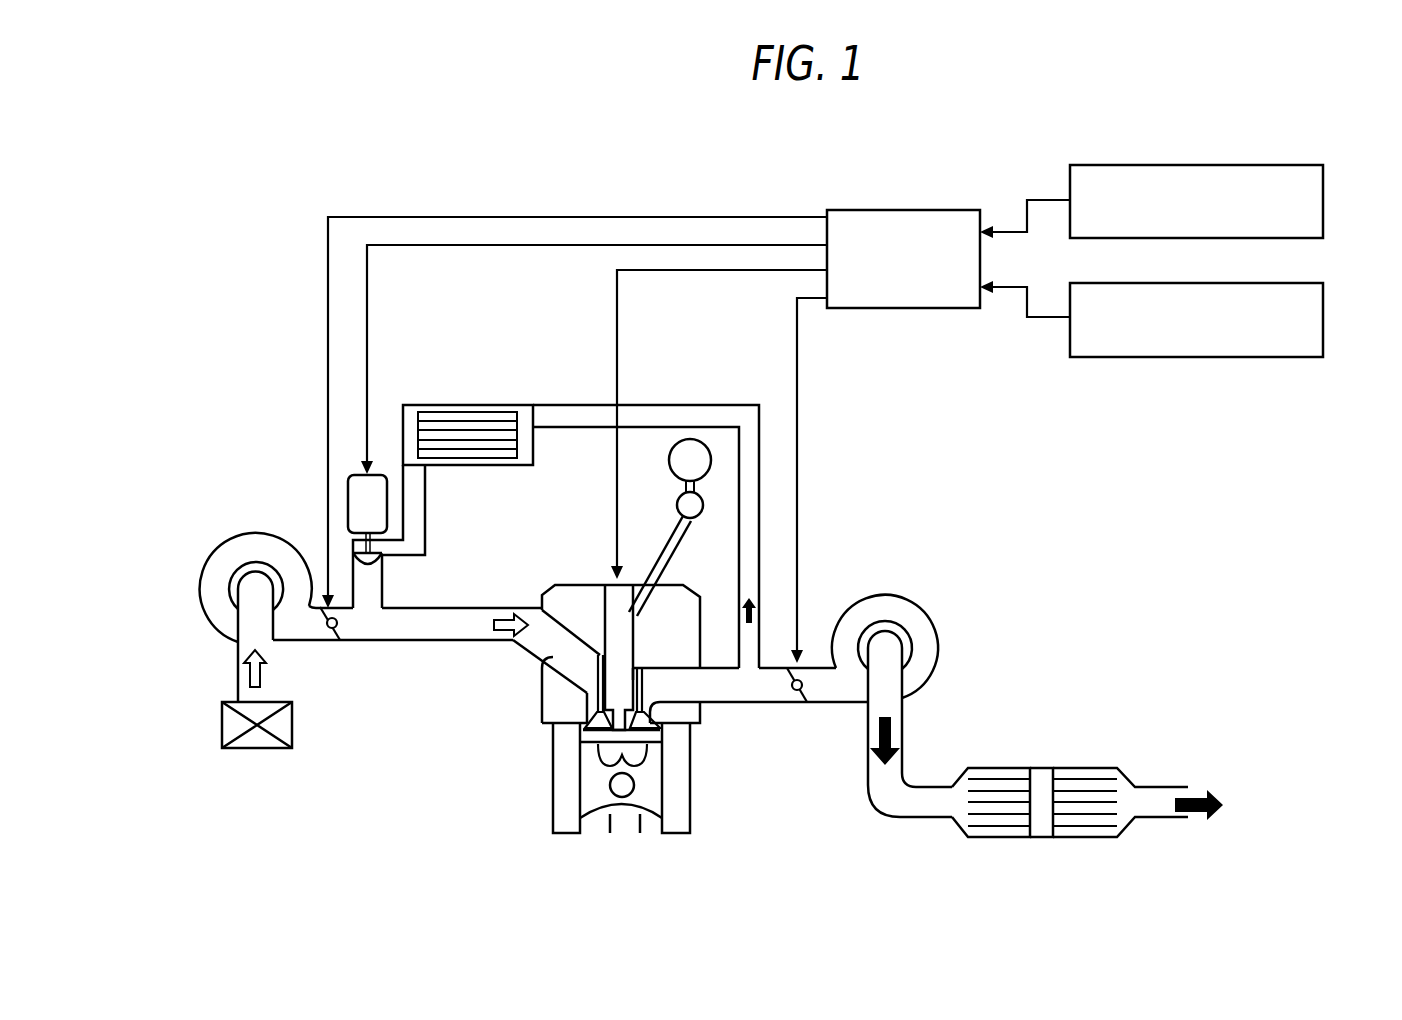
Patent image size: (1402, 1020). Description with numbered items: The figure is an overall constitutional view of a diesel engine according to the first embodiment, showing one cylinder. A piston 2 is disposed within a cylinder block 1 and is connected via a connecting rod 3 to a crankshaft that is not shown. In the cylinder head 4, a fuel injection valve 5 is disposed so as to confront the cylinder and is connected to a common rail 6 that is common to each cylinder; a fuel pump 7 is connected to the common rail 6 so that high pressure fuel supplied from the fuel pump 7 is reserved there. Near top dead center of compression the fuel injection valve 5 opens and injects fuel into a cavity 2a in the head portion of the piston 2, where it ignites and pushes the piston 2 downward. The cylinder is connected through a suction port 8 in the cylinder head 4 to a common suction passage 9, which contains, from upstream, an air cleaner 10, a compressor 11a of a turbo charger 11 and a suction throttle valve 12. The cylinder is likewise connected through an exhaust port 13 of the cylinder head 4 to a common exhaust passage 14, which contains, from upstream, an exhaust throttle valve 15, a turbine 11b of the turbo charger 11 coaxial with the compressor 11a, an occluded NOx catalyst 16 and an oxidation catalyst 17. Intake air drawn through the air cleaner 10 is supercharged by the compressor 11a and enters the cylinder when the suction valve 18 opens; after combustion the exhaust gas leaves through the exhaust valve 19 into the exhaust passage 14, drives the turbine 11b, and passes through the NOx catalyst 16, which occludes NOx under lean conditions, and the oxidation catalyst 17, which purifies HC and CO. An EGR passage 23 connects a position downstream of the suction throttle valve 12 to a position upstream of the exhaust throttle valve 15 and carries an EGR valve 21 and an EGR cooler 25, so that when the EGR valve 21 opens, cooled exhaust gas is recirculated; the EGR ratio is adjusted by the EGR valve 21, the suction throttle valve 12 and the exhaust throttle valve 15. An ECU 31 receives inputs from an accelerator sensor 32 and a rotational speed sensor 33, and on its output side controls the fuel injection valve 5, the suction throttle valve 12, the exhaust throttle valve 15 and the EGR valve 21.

The cylinder block 1 is at (692, 805).
The piston 2 is at (584, 817).
The cavity 2a is at (598, 760).
The connecting rod 3 is at (628, 820).
The cylinder head 4 is at (552, 693).
The fuel injection valve 5 is at (612, 607).
The common rail 6 is at (677, 505).
The fuel pump 7 is at (669, 460).
The suction port 8 is at (545, 657).
The suction passage 9 is at (384, 638).
The air cleaner 10 is at (228, 718).
The turbo charger 11 is at (219, 583).
The compressor 11a is at (212, 588).
The turbine 11b is at (923, 643).
The suction throttle valve 12 is at (340, 640).
The exhaust port 13 is at (680, 697).
The exhaust passage 14 is at (837, 694).
The exhaust throttle valve 15 is at (803, 705).
The occluded NOx catalyst 16 is at (1007, 773).
The oxidation catalyst 17 is at (1088, 773).
The suction valve 18 is at (578, 720).
The exhaust valve 19 is at (677, 730).
The EGR valve 21 is at (378, 470).
The EGR passage 23 is at (672, 404).
The EGR cooler 25 is at (470, 404).
The ECU 31 is at (897, 209).
The accelerator sensor 32 is at (1323, 200).
The rotational speed sensor 33 is at (1323, 318).